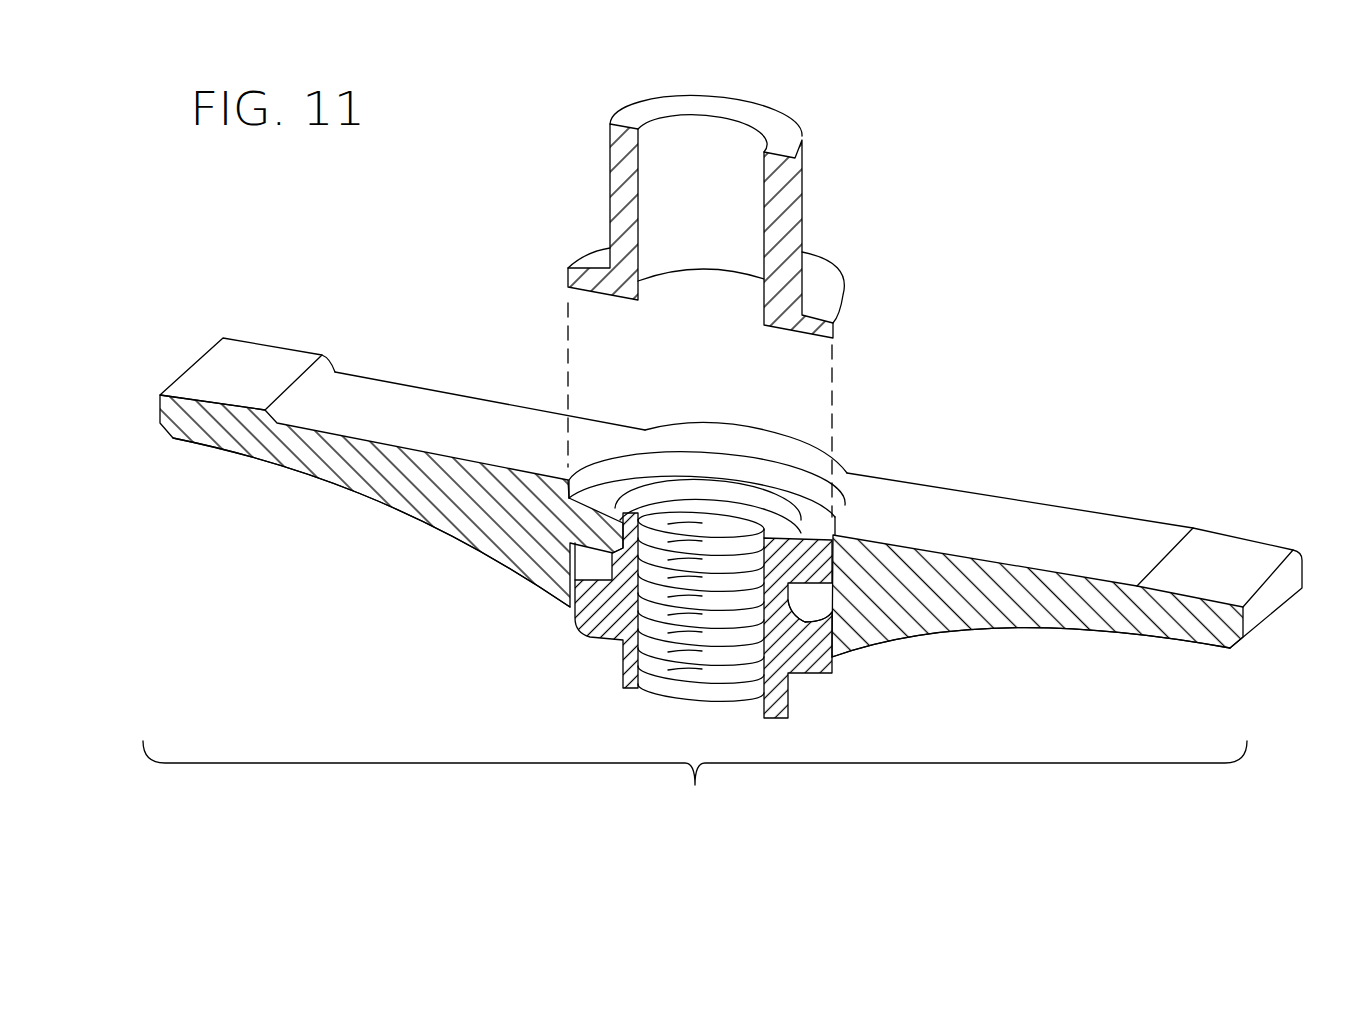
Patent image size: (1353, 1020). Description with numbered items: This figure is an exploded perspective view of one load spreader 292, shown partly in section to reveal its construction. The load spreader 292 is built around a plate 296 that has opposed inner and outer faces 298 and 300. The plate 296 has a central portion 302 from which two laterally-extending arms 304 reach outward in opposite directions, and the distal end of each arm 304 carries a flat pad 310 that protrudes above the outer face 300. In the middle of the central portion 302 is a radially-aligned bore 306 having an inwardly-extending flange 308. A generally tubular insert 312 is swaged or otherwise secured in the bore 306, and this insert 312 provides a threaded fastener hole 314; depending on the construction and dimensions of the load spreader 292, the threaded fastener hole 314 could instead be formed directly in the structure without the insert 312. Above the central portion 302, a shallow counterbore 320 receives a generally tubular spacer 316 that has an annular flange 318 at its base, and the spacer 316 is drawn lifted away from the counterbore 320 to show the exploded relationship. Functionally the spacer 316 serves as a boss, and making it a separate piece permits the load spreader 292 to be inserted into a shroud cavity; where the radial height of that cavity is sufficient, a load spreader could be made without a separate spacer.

The load spreader 292 is at (722, 768).
The plate 296 is at (476, 586).
The inner face 298 is at (1010, 633).
The outer face 300 is at (731, 544).
The central portion 302 is at (818, 515).
The laterally-extending arm 304 is at (470, 431).
The radially-aligned bore 306 is at (833, 653).
The inwardly-extending flange 308 is at (847, 478).
The flat pad 310 is at (262, 381).
The tubular insert 312 is at (622, 672).
The threaded fastener hole 314 is at (764, 702).
The tubular spacer 316 is at (759, 303).
The annular flange 318 is at (838, 290).
The shallow counterbore 320 is at (692, 457).